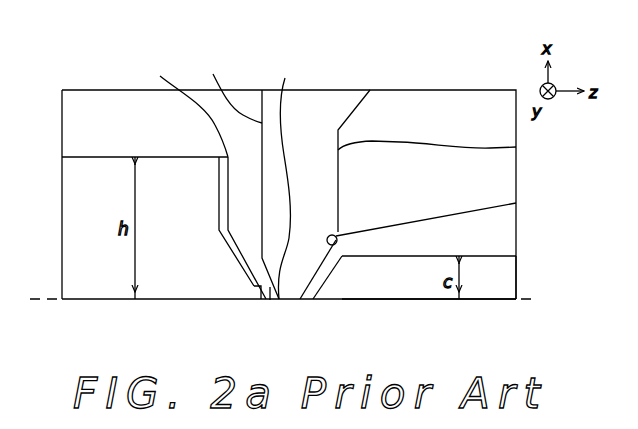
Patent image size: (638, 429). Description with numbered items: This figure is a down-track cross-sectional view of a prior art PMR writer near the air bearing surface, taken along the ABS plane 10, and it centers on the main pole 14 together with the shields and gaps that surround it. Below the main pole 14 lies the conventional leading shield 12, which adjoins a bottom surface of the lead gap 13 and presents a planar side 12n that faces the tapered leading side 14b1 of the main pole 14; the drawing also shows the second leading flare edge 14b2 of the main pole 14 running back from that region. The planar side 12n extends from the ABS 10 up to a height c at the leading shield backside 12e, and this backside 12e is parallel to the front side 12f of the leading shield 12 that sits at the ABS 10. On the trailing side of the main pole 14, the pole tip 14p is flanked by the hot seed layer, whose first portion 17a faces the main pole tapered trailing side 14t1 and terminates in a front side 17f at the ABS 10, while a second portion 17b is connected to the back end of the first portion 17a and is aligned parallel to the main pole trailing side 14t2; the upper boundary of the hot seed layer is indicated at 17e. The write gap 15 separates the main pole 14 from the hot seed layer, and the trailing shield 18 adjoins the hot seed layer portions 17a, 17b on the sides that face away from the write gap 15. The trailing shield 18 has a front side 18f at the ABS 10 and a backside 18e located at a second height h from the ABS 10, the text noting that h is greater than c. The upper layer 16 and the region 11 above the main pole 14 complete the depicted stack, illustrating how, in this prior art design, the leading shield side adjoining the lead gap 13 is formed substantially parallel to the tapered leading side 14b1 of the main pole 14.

The ABS 10 is at (284, 300).
The second pole layer 11 is at (427, 103).
The leading shield 12 is at (503, 273).
The leading shield backside 12e is at (495, 256).
The front side 12f is at (403, 302).
The planar side 12n is at (335, 270).
The lead gap 13 is at (316, 286).
The main pole 14 is at (335, 103).
The tapered leading side 14b1 is at (516, 203).
The upper flare edge of pole piece 14b2 is at (516, 147).
The pole tip 14p is at (292, 302).
The main pole tapered trailing side 14t1 is at (286, 180).
The main pole trailing side 14t2 is at (231, 92).
The write gap 15 is at (270, 300).
The top shield layer 16 is at (75, 100).
The first portion 17a is at (243, 262).
The second portion 17b is at (222, 205).
The upper edge of trailing shield 17e is at (185, 109).
The front side 17f is at (268, 300).
The trailing shield 18 is at (75, 218).
The backside 18e is at (87, 157).
The front side 18f is at (97, 300).